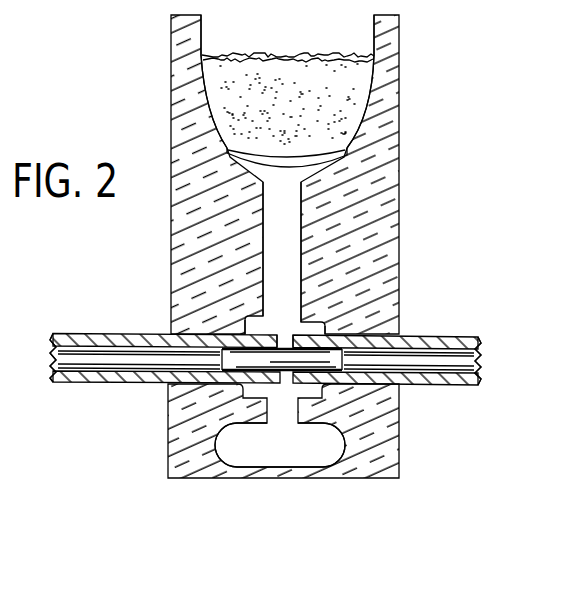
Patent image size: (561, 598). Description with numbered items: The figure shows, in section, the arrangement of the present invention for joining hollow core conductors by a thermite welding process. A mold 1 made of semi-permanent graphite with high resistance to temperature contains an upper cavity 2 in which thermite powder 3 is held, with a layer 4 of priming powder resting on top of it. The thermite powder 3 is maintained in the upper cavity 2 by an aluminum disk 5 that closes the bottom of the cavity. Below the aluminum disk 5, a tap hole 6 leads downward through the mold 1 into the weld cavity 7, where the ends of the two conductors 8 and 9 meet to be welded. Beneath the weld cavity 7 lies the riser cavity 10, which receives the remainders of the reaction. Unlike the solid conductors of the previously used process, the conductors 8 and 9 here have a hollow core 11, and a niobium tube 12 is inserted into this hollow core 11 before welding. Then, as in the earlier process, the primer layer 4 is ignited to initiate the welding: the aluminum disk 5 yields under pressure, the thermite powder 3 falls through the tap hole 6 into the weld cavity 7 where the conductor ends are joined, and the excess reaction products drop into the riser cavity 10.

The mold 1 is at (396, 153).
The upper cavity 2 is at (203, 46).
The thermite powder 3 is at (325, 66).
The layer of priming powder 4 is at (270, 52).
The aluminum disk 5 is at (285, 164).
The tap hole 6 is at (300, 275).
The weld cavity 7 is at (330, 327).
The conductor 8 is at (92, 333).
The conductor 9 is at (453, 343).
The riser cavity 10 is at (237, 455).
The hollow core 11 is at (53, 358).
The niobium tube 12 is at (285, 368).